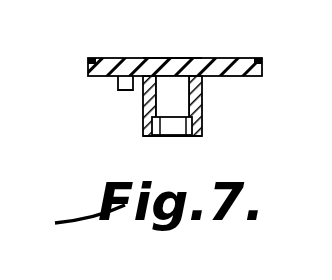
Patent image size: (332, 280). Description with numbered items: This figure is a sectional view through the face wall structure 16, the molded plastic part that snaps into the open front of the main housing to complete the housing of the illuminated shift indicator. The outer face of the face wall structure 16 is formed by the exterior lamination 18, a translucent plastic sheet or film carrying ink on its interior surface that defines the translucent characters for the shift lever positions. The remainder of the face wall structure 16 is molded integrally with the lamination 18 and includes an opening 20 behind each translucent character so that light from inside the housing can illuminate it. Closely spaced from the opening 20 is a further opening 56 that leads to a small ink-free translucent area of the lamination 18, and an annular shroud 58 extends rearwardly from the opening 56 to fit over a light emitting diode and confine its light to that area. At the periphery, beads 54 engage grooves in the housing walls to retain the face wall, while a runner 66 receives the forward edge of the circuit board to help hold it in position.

The face wall structure 16 is at (105, 52).
The exterior lamination 18 is at (228, 59).
The opening 20 is at (235, 77).
The bead 54 is at (88, 62).
The opening 56 is at (177, 58).
The annular shroud 58 is at (192, 99).
The runner 66 is at (130, 90).